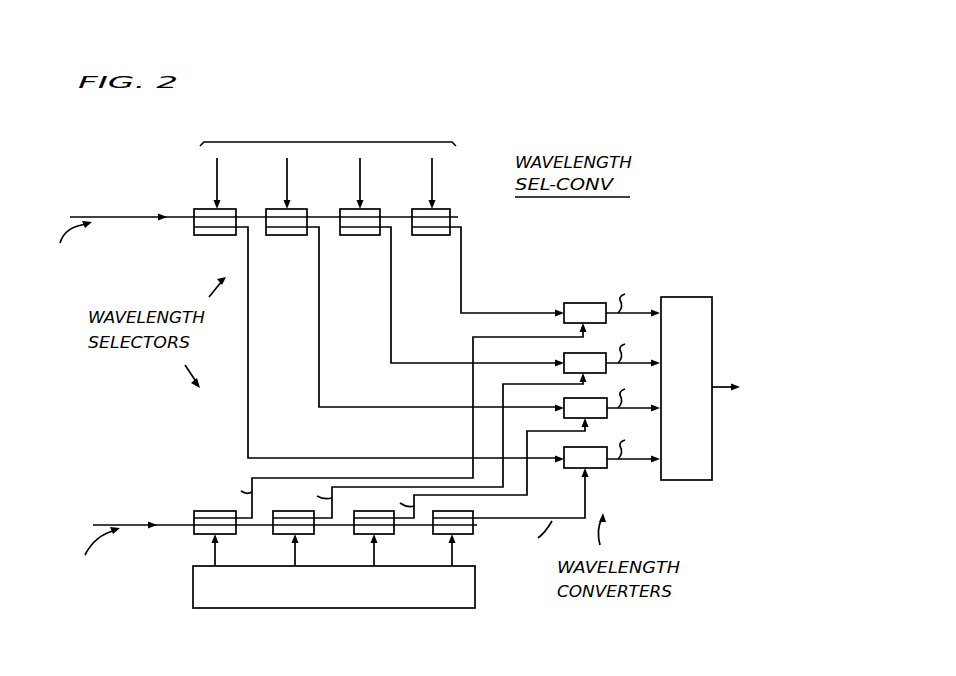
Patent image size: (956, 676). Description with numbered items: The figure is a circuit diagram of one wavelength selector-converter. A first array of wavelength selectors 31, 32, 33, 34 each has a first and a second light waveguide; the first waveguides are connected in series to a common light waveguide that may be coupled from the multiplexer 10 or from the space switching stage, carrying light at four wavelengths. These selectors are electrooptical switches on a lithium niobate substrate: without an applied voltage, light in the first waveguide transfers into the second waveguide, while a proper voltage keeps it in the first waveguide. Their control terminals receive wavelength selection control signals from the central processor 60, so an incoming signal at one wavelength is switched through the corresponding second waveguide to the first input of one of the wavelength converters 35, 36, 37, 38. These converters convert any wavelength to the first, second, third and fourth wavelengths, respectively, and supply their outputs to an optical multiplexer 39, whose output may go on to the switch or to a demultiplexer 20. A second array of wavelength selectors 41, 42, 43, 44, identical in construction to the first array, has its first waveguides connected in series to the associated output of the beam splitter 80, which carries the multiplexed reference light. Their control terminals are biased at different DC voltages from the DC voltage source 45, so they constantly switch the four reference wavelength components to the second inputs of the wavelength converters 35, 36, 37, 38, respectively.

The multiplexer 10 is at (250, 205).
The demultiplexer (output destination) 20 is at (726, 378).
The wavelength selector 31 is at (226, 209).
The wavelength selector 32 is at (297, 209).
The wavelength selector 33 is at (370, 209).
The wavelength selector 34 is at (442, 209).
The wavelength converter 35 is at (578, 302).
The wavelength converter 36 is at (589, 353).
The wavelength converter 37 is at (594, 380).
The wavelength converter 38 is at (597, 469).
The optical multiplexer 39 is at (690, 481).
The wavelength selector 41 is at (228, 535).
The wavelength selector 42 is at (306, 535).
The wavelength selector 43 is at (386, 535).
The wavelength selector 44 is at (466, 535).
The DC voltage source 45 is at (475, 590).
The central processor 60 is at (352, 159).
The beam splitter 80 is at (264, 527).